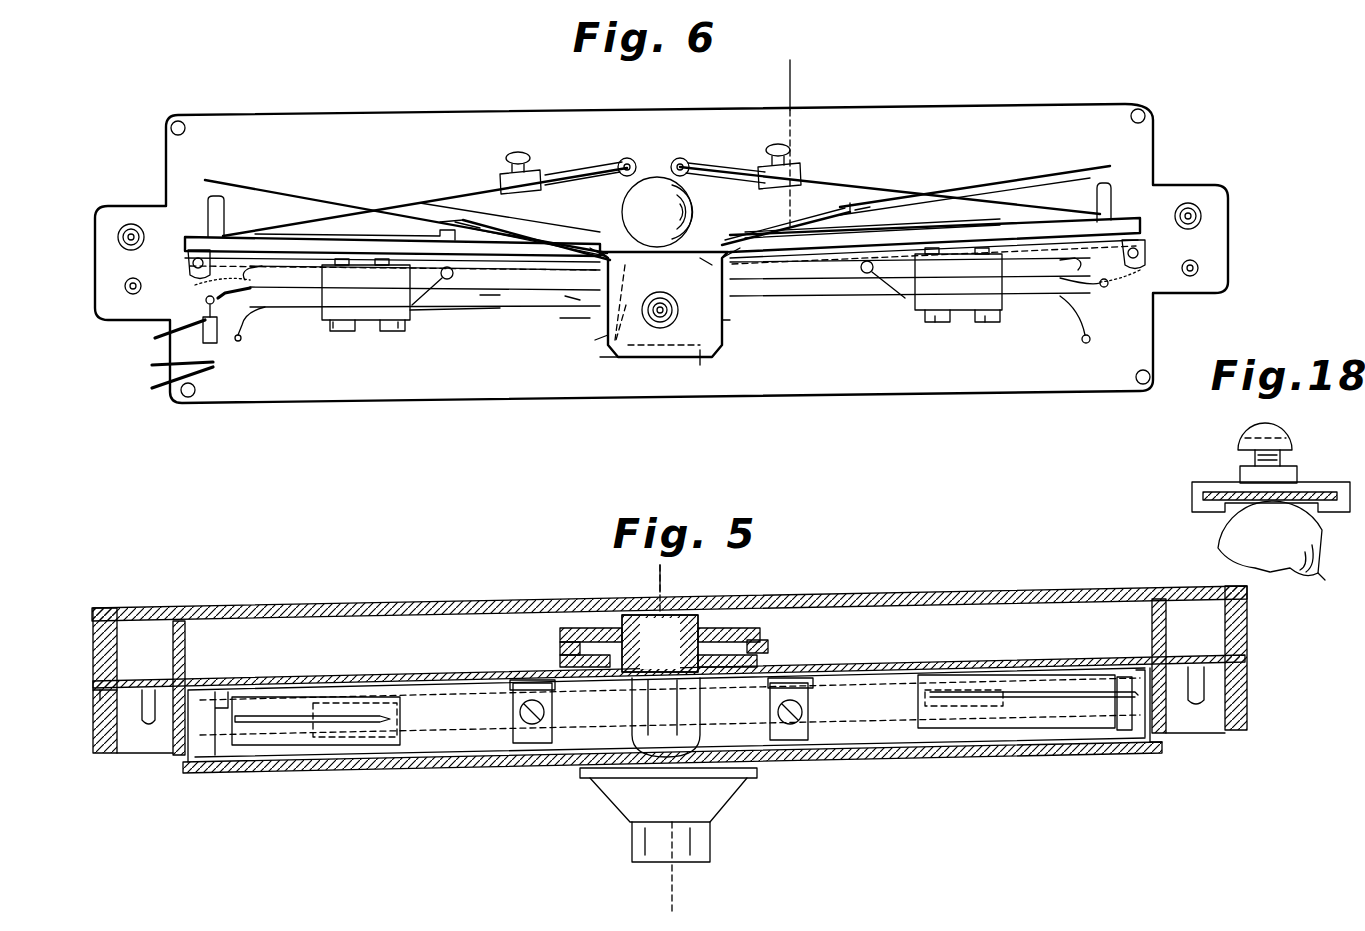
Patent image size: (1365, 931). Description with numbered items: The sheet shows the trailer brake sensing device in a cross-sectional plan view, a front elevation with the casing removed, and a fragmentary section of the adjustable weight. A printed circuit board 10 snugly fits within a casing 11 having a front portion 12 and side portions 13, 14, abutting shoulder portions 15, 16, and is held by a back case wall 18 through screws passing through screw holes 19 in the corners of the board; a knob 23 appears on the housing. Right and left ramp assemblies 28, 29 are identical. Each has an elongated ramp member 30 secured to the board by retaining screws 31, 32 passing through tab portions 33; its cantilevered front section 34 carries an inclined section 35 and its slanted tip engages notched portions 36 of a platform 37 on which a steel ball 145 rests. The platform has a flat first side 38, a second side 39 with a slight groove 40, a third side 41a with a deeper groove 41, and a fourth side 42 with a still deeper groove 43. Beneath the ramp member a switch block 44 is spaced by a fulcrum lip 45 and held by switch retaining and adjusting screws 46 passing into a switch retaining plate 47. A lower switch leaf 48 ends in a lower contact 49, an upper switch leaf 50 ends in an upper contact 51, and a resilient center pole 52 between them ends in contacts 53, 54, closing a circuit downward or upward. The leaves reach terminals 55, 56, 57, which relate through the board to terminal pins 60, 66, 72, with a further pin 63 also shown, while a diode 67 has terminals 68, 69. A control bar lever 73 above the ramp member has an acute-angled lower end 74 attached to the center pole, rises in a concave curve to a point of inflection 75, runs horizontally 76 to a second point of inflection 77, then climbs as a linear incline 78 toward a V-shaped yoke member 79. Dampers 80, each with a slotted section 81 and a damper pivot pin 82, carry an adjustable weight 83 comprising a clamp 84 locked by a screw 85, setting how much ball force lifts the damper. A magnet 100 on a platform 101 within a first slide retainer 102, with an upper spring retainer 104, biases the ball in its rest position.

In FIG. 6, the printed circuit board 10 is at (335, 128).
In FIG. 5, the printed circuit board 10 is at (328, 678).
In FIG. 5, the casing 11 is at (285, 773).
In FIG. 5, the front portion 12 is at (880, 775).
In FIG. 5, the side portion 13 is at (1248, 655).
In FIG. 5, the side portion 14 is at (98, 683).
In FIG. 5, the shoulder portion 15 is at (97, 692).
In FIG. 5, the shoulder portion 16 is at (1247, 672).
In FIG. 6, the back case wall 18 is at (788, 68).
In FIG. 5, the back case wall 18 is at (275, 607).
In FIG. 6, the screw holes 19 is at (185, 120).
In FIG. 5, the knob 23 is at (712, 835).
In FIG. 6, the right ramp assembly 28 is at (951, 141).
In FIG. 6, the left ramp assembly 29 is at (386, 161).
In FIG. 6, the ramp member 30 is at (276, 246).
In FIG. 5, the ramp member 30 is at (312, 773).
In FIG. 6, the retaining screw 31 is at (198, 278).
In FIG. 6, the retaining screw 32 is at (670, 296).
In FIG. 6, the tab portions 33 is at (188, 262).
In FIG. 6, the front section 34 is at (512, 233).
In FIG. 5, the front section 34 is at (455, 752).
In FIG. 6, the inclined section 35 is at (627, 228).
In FIG. 6, the notched portions 36 is at (735, 360).
In FIG. 6, the platform 37 is at (695, 345).
In FIG. 6, the first side 38 is at (707, 232).
In FIG. 6, the second side 39 is at (722, 320).
In FIG. 6, the slight groove 40 is at (678, 310).
In FIG. 6, the deeper groove 41 is at (618, 355).
In FIG. 6, the third side 41a is at (645, 378).
In FIG. 6, the fourth side 42 is at (600, 350).
In FIG. 6, the still deeper groove 43 is at (635, 300).
In FIG. 6, the switch block 44 is at (370, 320).
In FIG. 6, the fulcrum lip 45 is at (953, 222).
In FIG. 6, the switch retaining and adjusting screws 46 is at (333, 330).
In FIG. 6, the switch retaining plate 47 is at (627, 276).
In FIG. 6, the lower switch leaf 48 is at (480, 322).
In FIG. 6, the lower contact 49 is at (575, 320).
In FIG. 6, the upper switch leaf 50 is at (900, 315).
In FIG. 6, the upper contact 51 is at (562, 240).
In FIG. 6, the center pole 52 is at (490, 302).
In FIG. 6, the upper contact of pole 53 is at (670, 250).
In FIG. 6, the lower contact of pole 54 is at (575, 300).
In FIG. 6, the terminal 55 is at (268, 336).
In FIG. 6, the terminal 56 is at (1120, 278).
In FIG. 6, the terminal 57 is at (262, 273).
In FIG. 6, the terminal pin 60 is at (1190, 278).
In FIG. 6, the bushing 63 is at (1192, 205).
In FIG. 5, the bushing 63 is at (1200, 700).
In FIG. 6, the terminal pin 66 is at (118, 237).
In FIG. 5, the terminal pin 66 is at (150, 725).
In FIG. 6, the diode 67 is at (165, 363).
In FIG. 6, the diode terminal 68 is at (164, 386).
In FIG. 6, the diode terminal 69 is at (167, 328).
In FIG. 6, the terminal pin 72 is at (125, 287).
In FIG. 6, the control bar lever 73 is at (505, 232).
In FIG. 5, the control bar lever 73 is at (1035, 757).
In FIG. 6, the lower end of lever 74 is at (695, 302).
In FIG. 6, the point of inflection 75 is at (482, 235).
In FIG. 6, the horizontal position 76 is at (475, 200).
In FIG. 6, the point of inflection 77 is at (440, 205).
In FIG. 6, the linear incline 78 is at (998, 192).
In FIG. 6, the V-shaped yoke member 79 is at (166, 200).
In FIG. 5, the V-shaped yoke member 79 is at (1168, 725).
In FIG. 6, the damper 80 is at (570, 175).
In FIG. 18, the damper 80 is at (1297, 500).
In FIG. 5, the damper 80 is at (432, 680).
In FIG. 5, the slotted section 81 is at (1105, 757).
In FIG. 6, the damper pivot pin 82 is at (627, 157).
In FIG. 6, the adjustable weight 83 is at (792, 150).
In FIG. 5, the adjustable weight 83 is at (522, 680).
In FIG. 18, the clamp 84 is at (1336, 478).
In FIG. 18, the screw 85 is at (1296, 438).
In FIG. 5, the magnet 100 is at (680, 612).
In FIG. 5, the platform 101 is at (638, 590).
In FIG. 5, the first slide retainer 102 is at (578, 615).
In FIG. 5, the upper spring retainer 104 is at (560, 645).
In FIG. 6, the steel ball 145 is at (655, 190).
In FIG. 18, the steel ball 145 is at (1327, 563).